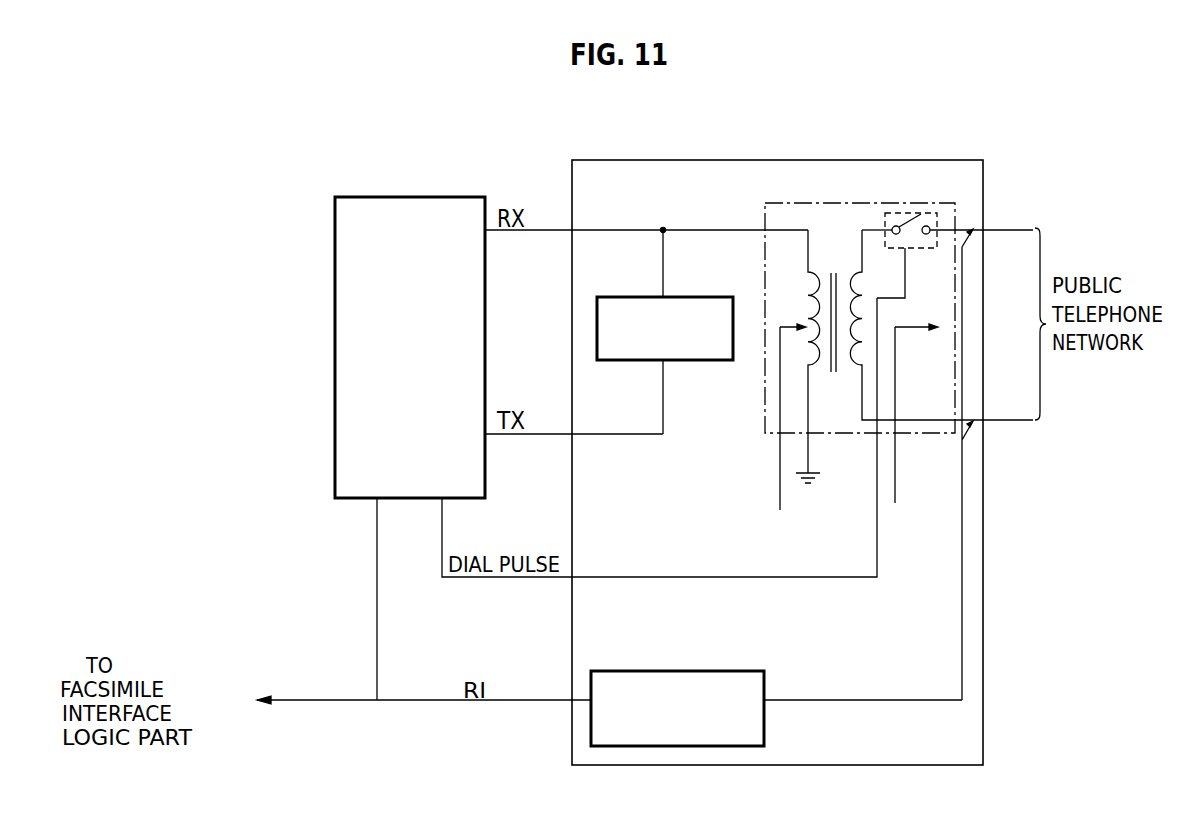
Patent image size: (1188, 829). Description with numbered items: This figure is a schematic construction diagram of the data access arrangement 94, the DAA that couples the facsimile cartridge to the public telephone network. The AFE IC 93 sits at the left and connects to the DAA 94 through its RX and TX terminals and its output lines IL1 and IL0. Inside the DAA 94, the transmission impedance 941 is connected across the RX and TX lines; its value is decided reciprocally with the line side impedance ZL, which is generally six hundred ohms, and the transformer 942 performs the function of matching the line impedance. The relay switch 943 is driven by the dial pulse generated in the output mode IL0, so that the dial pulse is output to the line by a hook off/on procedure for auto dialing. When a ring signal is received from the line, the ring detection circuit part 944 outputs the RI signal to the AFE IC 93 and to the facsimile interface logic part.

The AFE IC 93 is at (432, 197).
The data access arrangement 94 is at (985, 171).
The transmission impedance 941 is at (677, 297).
The transformer 942 is at (874, 203).
The relay switch 943 is at (927, 250).
The ring detection circuit part 944 is at (700, 670).